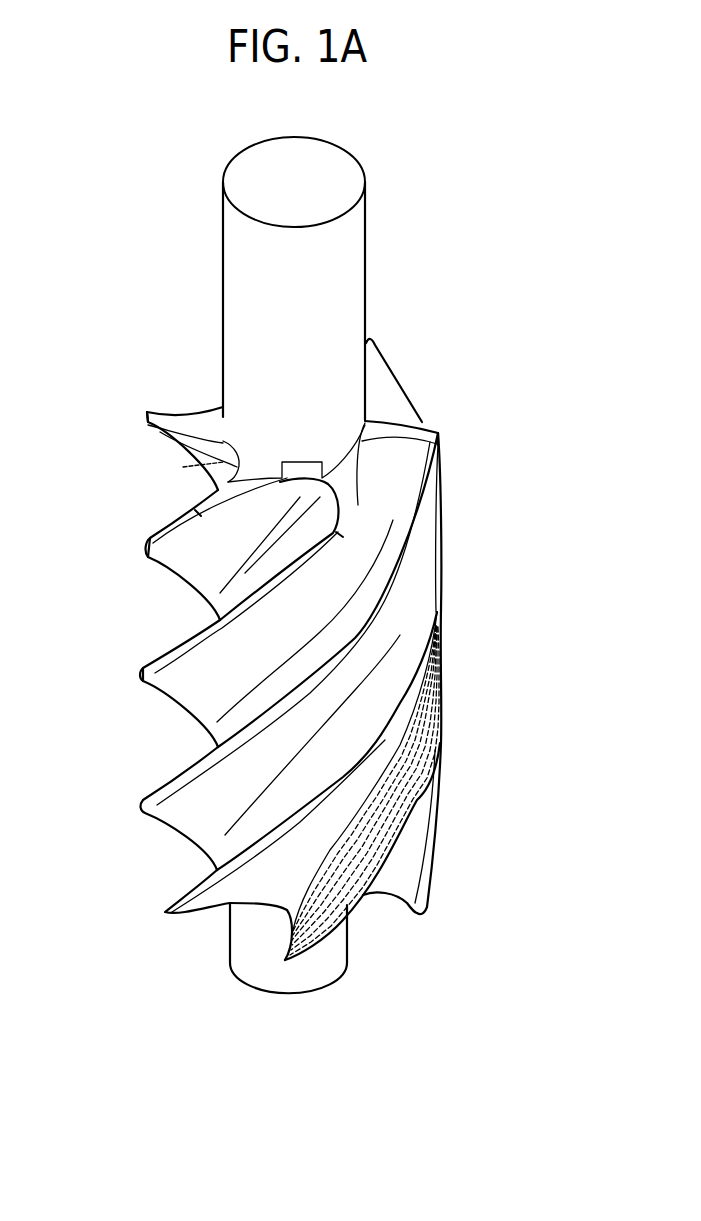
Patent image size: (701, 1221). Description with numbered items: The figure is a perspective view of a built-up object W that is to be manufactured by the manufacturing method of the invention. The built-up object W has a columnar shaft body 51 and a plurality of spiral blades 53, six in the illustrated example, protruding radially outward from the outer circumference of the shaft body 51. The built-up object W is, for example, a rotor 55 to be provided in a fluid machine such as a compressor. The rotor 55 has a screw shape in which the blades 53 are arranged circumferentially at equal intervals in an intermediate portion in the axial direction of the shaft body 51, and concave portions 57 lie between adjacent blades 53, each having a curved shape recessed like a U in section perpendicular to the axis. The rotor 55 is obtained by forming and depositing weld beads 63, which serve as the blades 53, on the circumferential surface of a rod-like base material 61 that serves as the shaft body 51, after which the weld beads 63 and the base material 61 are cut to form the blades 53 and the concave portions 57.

The shaft body 51 is at (223, 256).
The spiral blades 53 is at (163, 410).
The rotor 55 is at (140, 568).
The concave portions 57 is at (183, 467).
The base material 61 is at (333, 953).
The weld beads 63 is at (268, 909).
The built-up object W is at (432, 365).